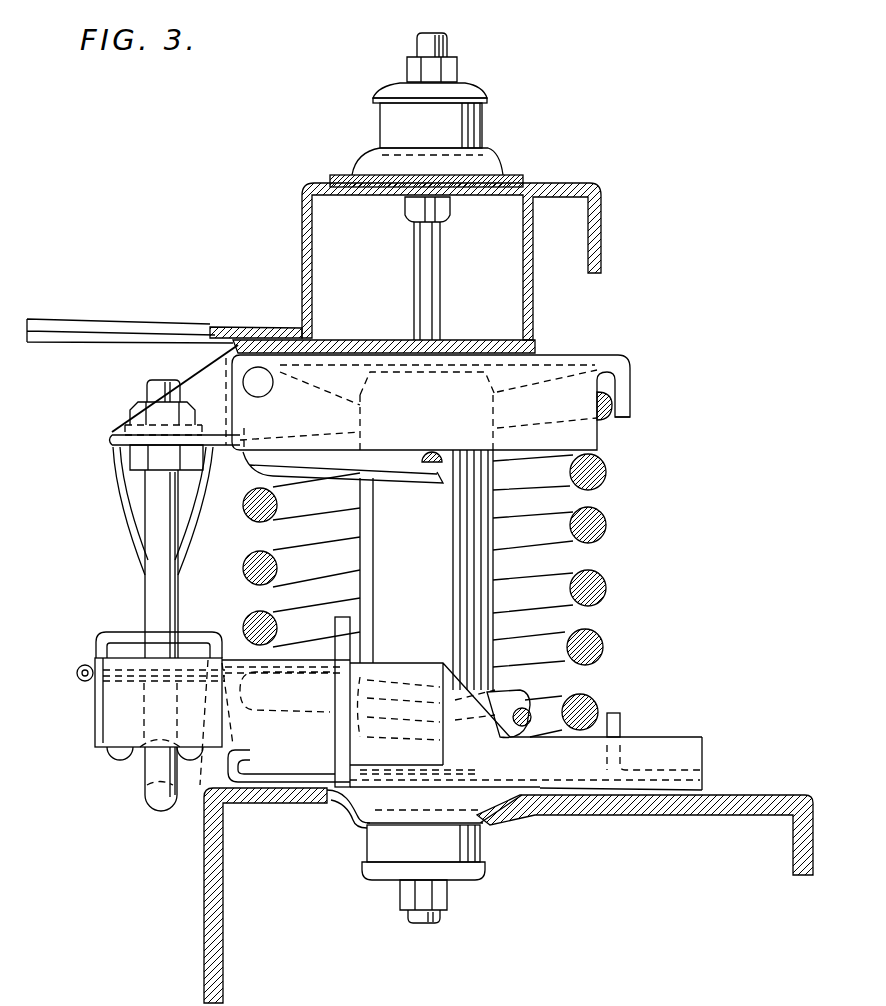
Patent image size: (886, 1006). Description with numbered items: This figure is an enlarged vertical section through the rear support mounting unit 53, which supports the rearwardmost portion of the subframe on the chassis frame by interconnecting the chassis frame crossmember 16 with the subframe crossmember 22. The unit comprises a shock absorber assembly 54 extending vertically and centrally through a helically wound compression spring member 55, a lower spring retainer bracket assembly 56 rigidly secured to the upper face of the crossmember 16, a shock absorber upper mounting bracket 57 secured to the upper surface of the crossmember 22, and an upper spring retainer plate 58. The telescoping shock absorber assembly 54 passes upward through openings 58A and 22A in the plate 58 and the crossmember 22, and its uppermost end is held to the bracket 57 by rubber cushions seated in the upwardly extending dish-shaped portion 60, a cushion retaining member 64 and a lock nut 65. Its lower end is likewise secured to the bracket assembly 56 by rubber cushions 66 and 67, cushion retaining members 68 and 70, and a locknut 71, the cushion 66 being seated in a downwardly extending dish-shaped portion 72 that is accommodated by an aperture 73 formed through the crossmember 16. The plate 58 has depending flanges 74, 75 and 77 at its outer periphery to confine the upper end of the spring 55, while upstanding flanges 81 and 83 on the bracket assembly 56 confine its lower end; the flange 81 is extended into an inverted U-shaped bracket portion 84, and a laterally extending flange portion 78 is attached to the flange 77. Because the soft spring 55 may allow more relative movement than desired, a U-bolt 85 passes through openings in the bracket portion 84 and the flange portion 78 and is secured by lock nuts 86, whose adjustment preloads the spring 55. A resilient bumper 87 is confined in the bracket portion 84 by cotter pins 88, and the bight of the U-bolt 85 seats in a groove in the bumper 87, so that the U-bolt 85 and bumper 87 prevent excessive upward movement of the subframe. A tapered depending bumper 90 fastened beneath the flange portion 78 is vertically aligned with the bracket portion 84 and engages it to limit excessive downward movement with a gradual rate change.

The crossmember 16 is at (204, 928).
The crossmember 22 is at (302, 260).
The opening 22A is at (483, 340).
The rear support mounting unit 53 is at (604, 653).
The shock absorber assembly 54 is at (441, 536).
The helically wound compression spring member 55 is at (605, 592).
The lower spring retainer bracket assembly 56 is at (702, 763).
The shock absorber upper mounting bracket 57 is at (345, 175).
The upper spring retainer plate 58 is at (587, 358).
The opening 58A is at (353, 340).
The dish-shaped portion 60 is at (500, 168).
The cushion retaining member 64 is at (487, 99).
The lock nut 65 is at (462, 64).
The rubber cushion 66 is at (497, 818).
The rubber cushion 67 is at (467, 845).
The cushion retaining member 68 is at (423, 843).
The cushion retaining member 70 is at (475, 878).
The locknut 71 is at (403, 907).
The dish-shaped portion 72 is at (358, 803).
The aperture 73 is at (333, 803).
The depending flange 74 is at (588, 440).
The depending flange 75 is at (630, 400).
The depending flange 77 is at (215, 387).
The laterally extending flange portion 78 is at (112, 437).
The upstanding flange 81 is at (208, 765).
The upstanding flange 83 is at (620, 721).
The inverted U-shaped bracket portion 84 is at (105, 630).
The U-bolt 85 is at (152, 566).
The lock nuts 86 is at (132, 410).
The bumper 87 is at (113, 760).
The cotter pins 88 is at (110, 688).
The depending bumper 90 is at (137, 488).